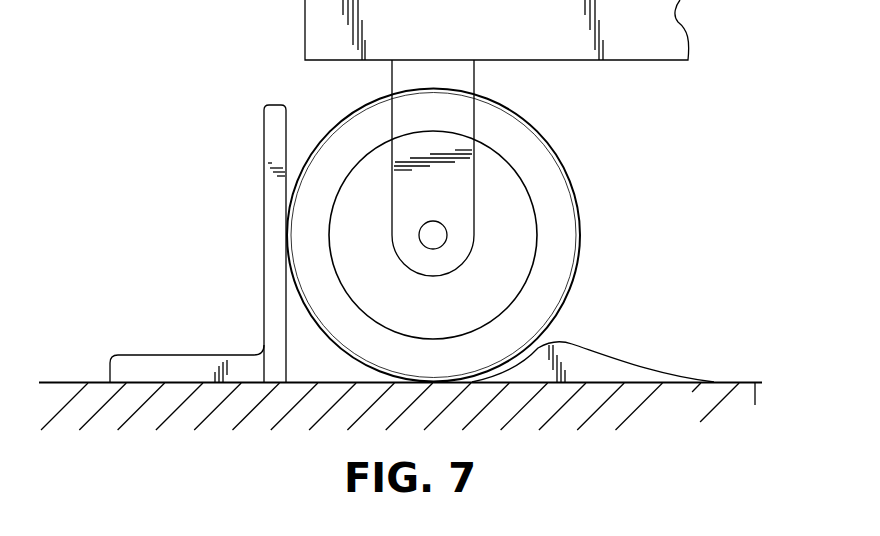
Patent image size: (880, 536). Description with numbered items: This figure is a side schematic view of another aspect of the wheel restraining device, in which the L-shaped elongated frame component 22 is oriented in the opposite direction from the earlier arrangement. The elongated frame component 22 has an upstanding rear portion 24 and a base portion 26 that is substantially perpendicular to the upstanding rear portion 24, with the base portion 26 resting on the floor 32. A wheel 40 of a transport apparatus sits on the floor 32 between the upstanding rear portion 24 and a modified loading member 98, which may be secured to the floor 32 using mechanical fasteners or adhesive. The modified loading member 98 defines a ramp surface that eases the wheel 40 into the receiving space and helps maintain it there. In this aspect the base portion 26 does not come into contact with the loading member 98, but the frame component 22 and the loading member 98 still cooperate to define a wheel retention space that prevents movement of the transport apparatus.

The elongated frame component 22 is at (198, 285).
The upstanding rear portion 24 is at (276, 133).
The base portion 26 is at (197, 376).
The floor 32 is at (60, 384).
The wheel 40 is at (540, 188).
The modified loading member 98 is at (583, 360).